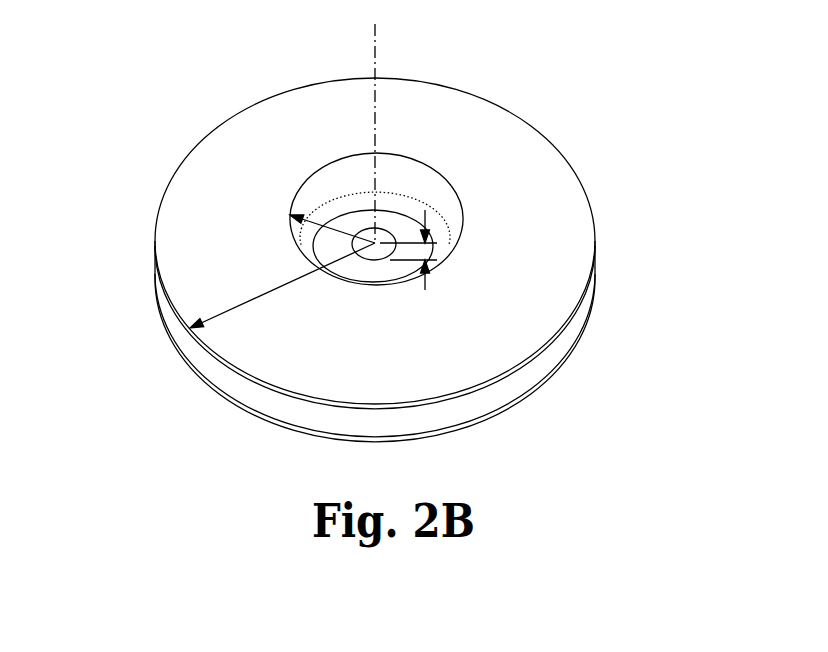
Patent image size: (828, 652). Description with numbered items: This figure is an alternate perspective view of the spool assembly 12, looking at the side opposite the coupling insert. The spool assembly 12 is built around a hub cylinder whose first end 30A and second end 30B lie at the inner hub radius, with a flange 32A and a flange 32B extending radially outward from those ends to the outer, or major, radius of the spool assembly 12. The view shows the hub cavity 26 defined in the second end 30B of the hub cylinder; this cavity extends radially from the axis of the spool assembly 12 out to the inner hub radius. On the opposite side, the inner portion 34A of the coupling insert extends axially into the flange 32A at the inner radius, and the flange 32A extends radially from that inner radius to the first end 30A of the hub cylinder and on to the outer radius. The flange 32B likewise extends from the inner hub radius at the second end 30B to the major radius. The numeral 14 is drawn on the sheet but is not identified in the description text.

The spool assembly 12 is at (140, 62).
The disc body top face 14 is at (533, 129).
The hub cavity 26 is at (292, 184).
The first end of hub cylinder 30A is at (417, 197).
The second end of hub cylinder 30B is at (402, 155).
The flange 32A is at (448, 420).
The flange 32B is at (562, 191).
The inner portion of insert 34A is at (325, 165).